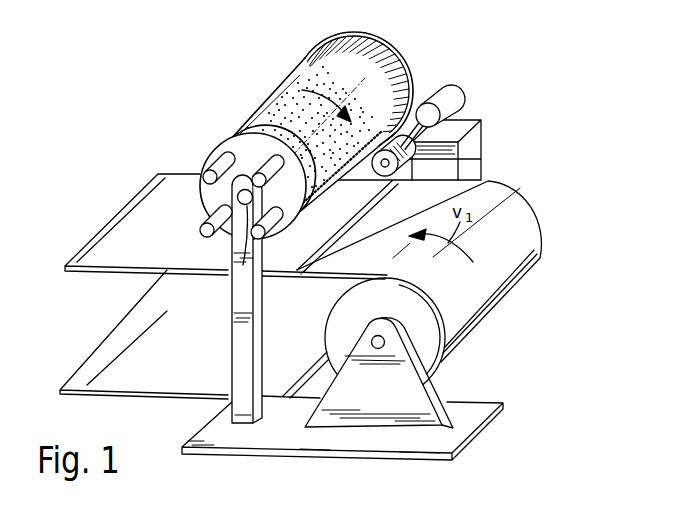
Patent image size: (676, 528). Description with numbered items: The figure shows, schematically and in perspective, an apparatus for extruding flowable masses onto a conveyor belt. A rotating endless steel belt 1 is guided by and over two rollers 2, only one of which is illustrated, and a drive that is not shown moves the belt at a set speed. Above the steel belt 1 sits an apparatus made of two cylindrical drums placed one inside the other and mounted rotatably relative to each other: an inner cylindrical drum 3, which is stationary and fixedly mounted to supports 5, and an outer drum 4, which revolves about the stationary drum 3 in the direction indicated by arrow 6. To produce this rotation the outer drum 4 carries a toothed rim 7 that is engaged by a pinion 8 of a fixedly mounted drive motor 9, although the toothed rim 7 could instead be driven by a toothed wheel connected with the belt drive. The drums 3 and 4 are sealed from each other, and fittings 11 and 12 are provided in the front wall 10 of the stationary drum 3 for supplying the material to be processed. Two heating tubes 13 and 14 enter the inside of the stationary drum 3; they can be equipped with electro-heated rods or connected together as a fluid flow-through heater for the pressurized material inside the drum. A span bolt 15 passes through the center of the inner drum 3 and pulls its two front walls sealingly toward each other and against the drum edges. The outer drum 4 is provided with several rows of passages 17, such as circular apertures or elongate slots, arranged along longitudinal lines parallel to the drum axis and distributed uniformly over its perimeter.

The steel belt 1 is at (112, 253).
The roller 2 is at (428, 360).
The inner cylindrical drum 3 is at (233, 138).
The outer cylindrical drum 4 is at (256, 118).
The support 5 is at (243, 418).
The arrow 6 is at (306, 72).
The toothed rim 7 is at (408, 79).
The pinion 8 is at (481, 159).
The drive motor 9 is at (464, 100).
The front wall 10 is at (203, 197).
The fitting 11 is at (197, 232).
The fitting 12 is at (266, 238).
The heating tube 13 is at (276, 173).
The heating tube 14 is at (210, 168).
The span bolt 15 is at (247, 299).
The passages 17 is at (273, 105).